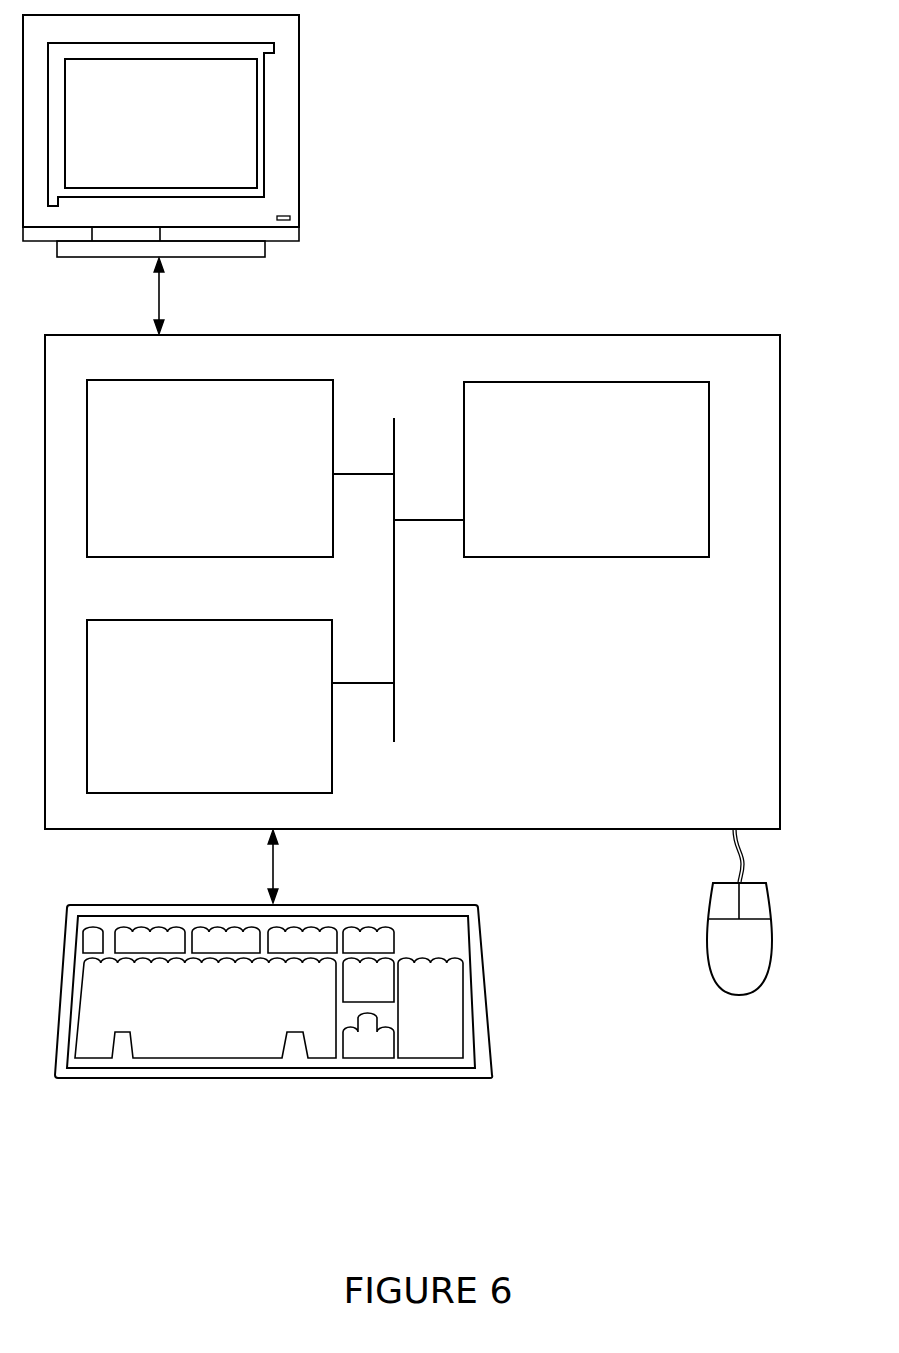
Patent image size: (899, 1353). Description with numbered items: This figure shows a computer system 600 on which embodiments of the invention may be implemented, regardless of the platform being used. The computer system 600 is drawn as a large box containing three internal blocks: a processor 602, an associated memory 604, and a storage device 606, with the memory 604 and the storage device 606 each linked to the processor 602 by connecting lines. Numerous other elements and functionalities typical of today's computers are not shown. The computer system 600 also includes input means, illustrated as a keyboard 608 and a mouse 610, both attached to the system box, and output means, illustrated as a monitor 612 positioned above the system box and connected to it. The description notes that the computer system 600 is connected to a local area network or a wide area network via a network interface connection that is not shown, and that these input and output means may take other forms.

The computer system 600 is at (541, 184).
The processor 602 is at (565, 483).
The memory 604 is at (187, 483).
The storage device 606 is at (182, 720).
The keyboard 608 is at (187, 1018).
The mouse 610 is at (715, 963).
The monitor 612 is at (135, 142).